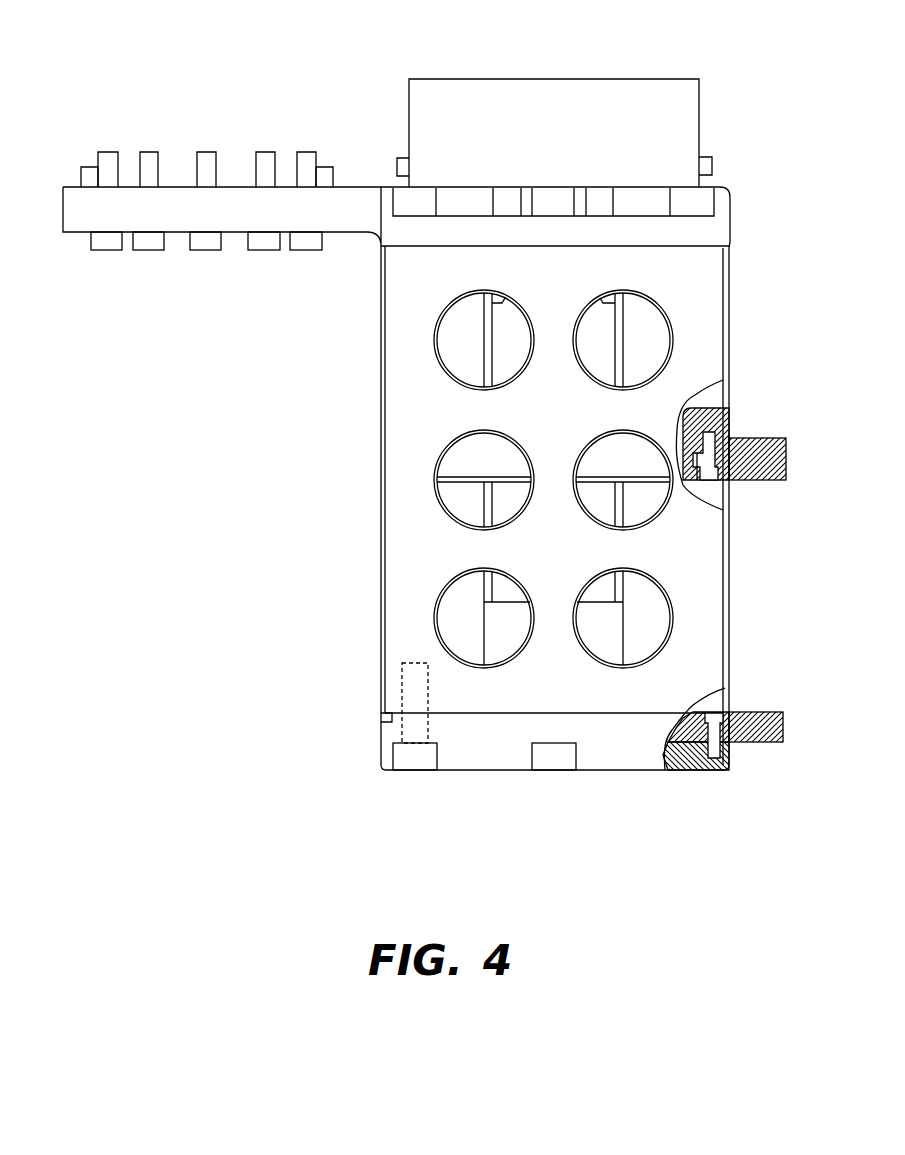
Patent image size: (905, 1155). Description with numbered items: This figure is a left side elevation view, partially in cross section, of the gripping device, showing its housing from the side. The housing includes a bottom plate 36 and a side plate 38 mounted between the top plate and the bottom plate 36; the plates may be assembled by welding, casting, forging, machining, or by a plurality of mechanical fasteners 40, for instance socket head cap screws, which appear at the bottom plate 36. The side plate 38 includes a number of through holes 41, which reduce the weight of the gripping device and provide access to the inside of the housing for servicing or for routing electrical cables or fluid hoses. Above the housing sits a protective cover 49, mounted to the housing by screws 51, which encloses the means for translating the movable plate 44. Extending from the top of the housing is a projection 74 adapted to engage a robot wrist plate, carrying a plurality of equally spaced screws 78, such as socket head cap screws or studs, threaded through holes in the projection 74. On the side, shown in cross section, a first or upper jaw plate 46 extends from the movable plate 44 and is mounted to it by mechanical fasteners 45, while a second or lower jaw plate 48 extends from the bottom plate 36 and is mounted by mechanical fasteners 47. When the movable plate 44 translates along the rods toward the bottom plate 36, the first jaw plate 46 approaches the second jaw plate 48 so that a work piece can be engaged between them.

The projection 74 is at (61, 122).
The screws 78 is at (107, 157).
The protective cover 49 is at (437, 82).
The screws 51 is at (402, 158).
The side plate 38 is at (390, 362).
The through holes 41 is at (532, 355).
The movable plate 44 is at (723, 420).
The mechanical fasteners 45 is at (708, 478).
The first jaw plate 46 is at (777, 440).
The mechanical fasteners 47 is at (715, 715).
The second jaw plate 48 is at (777, 728).
The bottom plate 36 is at (392, 733).
The mechanical fasteners 40 is at (415, 761).